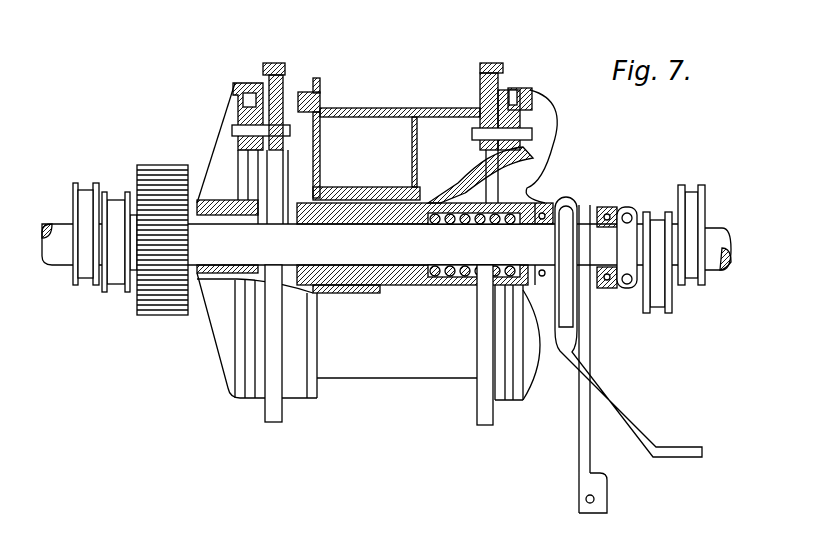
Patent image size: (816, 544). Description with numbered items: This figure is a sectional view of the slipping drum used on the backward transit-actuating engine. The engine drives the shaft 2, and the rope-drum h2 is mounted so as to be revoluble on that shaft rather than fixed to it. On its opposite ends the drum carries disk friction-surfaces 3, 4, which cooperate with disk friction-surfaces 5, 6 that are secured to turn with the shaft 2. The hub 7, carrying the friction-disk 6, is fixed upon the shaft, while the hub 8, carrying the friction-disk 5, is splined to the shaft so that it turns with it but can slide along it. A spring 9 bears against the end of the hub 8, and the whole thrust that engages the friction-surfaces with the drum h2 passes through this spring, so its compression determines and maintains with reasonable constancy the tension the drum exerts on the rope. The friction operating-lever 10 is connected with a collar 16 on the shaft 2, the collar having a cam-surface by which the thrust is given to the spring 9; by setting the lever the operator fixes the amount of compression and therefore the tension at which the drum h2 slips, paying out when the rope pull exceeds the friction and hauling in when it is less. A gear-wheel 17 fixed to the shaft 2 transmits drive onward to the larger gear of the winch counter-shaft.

The shaft 2 is at (386, 247).
The disk friction-surface 3 is at (502, 235).
The disk friction-surface 4 is at (274, 233).
The disk friction-surface 5 is at (520, 89).
The disk friction-surface 6 is at (261, 145).
The hub 7 is at (257, 240).
The hub 8 is at (442, 208).
The spring 9 is at (529, 204).
The friction operating-lever 10 is at (623, 415).
The collar 16 is at (565, 263).
The gear-wheel 17 is at (162, 229).
The rope-drum h2 is at (395, 239).